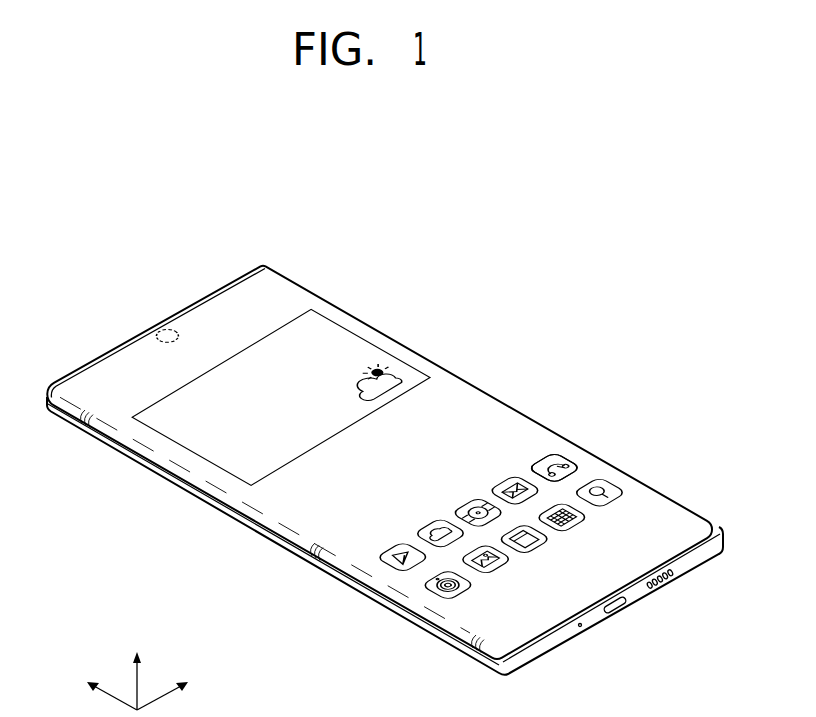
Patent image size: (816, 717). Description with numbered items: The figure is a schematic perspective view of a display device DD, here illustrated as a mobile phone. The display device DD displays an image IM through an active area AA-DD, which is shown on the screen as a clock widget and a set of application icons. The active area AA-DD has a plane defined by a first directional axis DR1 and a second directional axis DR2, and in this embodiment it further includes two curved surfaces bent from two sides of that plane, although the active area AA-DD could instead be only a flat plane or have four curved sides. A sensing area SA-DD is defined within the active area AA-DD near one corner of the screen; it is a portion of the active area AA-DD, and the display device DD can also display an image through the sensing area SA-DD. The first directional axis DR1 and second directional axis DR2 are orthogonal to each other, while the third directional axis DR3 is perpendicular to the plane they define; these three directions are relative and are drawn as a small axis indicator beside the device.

The display device DD is at (441, 270).
The sensing area SA-DD is at (165, 328).
The active area AA-DD is at (484, 421).
The image IM is at (566, 450).
The first directional axis DR1 is at (183, 690).
The second directional axis DR2 is at (91, 690).
The third directional axis DR3 is at (136, 670).